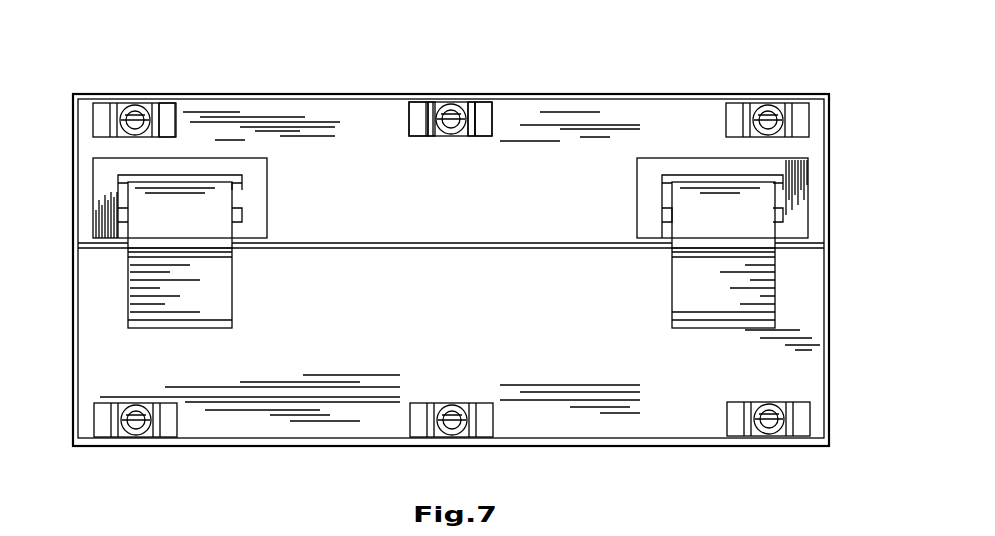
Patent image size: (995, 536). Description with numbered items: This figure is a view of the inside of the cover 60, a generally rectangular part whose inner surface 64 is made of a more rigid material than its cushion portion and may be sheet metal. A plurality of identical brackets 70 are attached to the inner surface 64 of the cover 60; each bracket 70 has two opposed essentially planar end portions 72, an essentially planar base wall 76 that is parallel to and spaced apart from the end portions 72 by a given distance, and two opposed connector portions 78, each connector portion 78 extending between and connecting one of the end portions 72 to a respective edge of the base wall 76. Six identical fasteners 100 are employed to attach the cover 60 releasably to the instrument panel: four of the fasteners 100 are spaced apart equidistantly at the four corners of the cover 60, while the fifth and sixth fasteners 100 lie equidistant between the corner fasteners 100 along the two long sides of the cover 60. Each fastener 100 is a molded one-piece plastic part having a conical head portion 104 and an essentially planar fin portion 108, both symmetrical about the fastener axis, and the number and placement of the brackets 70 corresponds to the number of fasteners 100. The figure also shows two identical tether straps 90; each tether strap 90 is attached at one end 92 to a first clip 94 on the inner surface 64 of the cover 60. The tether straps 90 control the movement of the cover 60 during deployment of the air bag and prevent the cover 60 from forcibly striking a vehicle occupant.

The cover 60 is at (598, 80).
The inner surface 64 is at (336, 146).
The bracket 70 is at (184, 131).
The end portion 72 is at (415, 115).
The base wall 76 is at (456, 107).
The connector portion 78 is at (432, 126).
The tether strap 90 is at (153, 298).
The end of tether strap 92 is at (167, 223).
The first clip 94 is at (112, 193).
The fastener 100 is at (123, 140).
The conical head portion 104 is at (138, 110).
The fin portion 108 is at (178, 111).